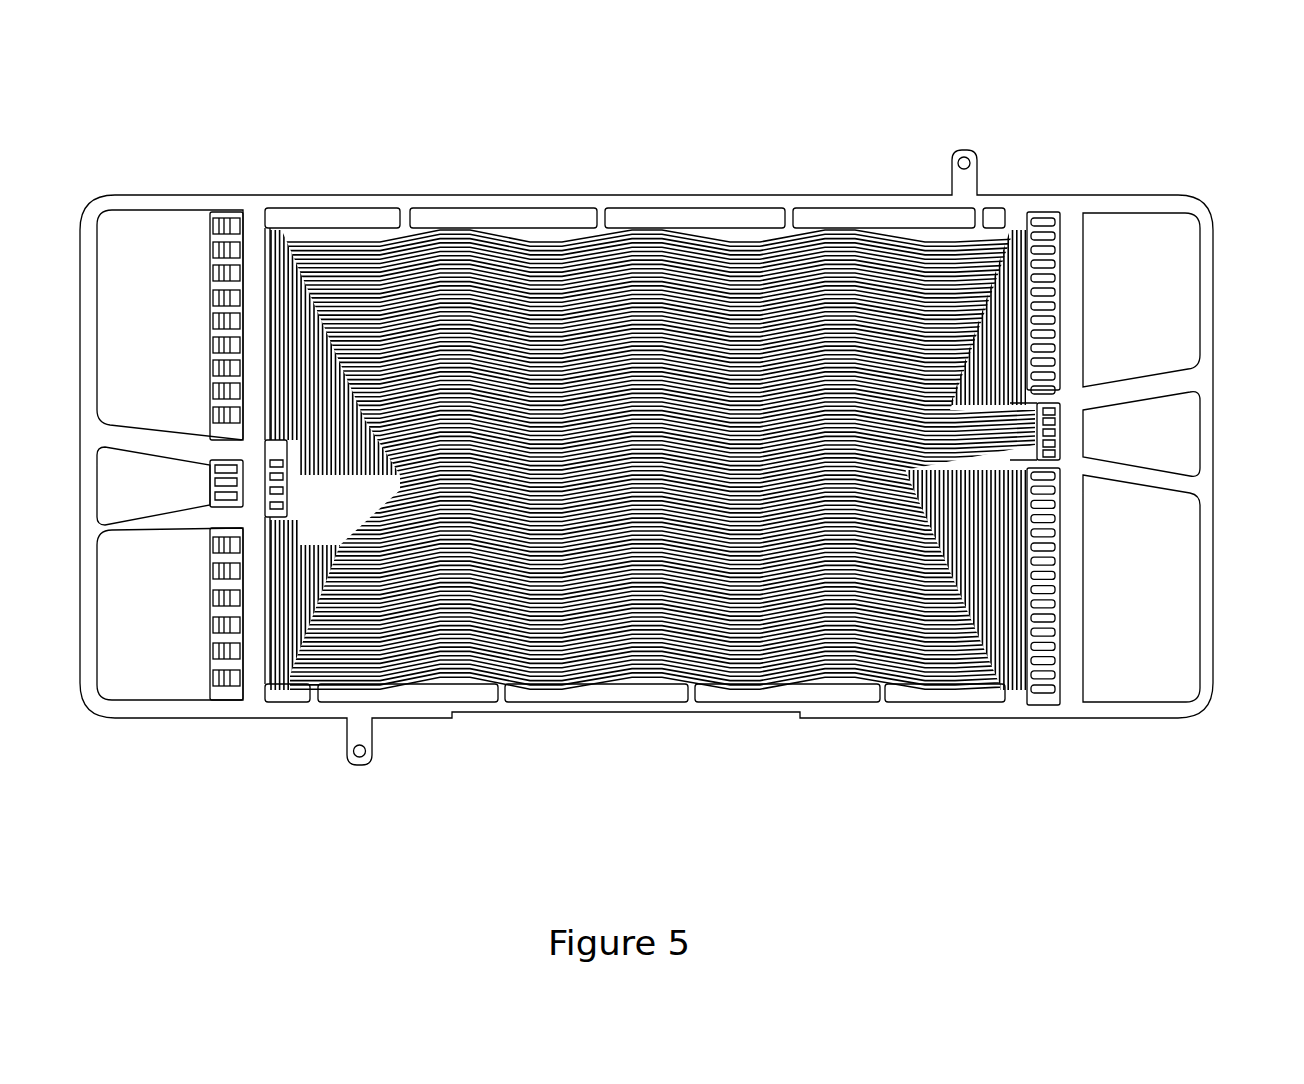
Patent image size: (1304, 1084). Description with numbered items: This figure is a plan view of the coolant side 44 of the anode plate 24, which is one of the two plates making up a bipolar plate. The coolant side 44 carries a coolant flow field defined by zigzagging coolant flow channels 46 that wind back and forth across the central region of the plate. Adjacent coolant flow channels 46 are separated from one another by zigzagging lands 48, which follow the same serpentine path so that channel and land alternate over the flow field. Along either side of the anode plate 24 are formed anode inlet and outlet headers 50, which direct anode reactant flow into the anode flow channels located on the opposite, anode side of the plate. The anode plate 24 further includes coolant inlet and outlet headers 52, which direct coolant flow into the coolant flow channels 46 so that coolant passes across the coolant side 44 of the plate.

The anode plate 24 is at (593, 194).
The coolant side 44 is at (387, 225).
The coolant flow channels 46 is at (545, 298).
The lands 48 is at (993, 226).
The anode inlet and outlet headers 50 is at (212, 484).
The coolant inlet and outlet headers 52 is at (208, 303).